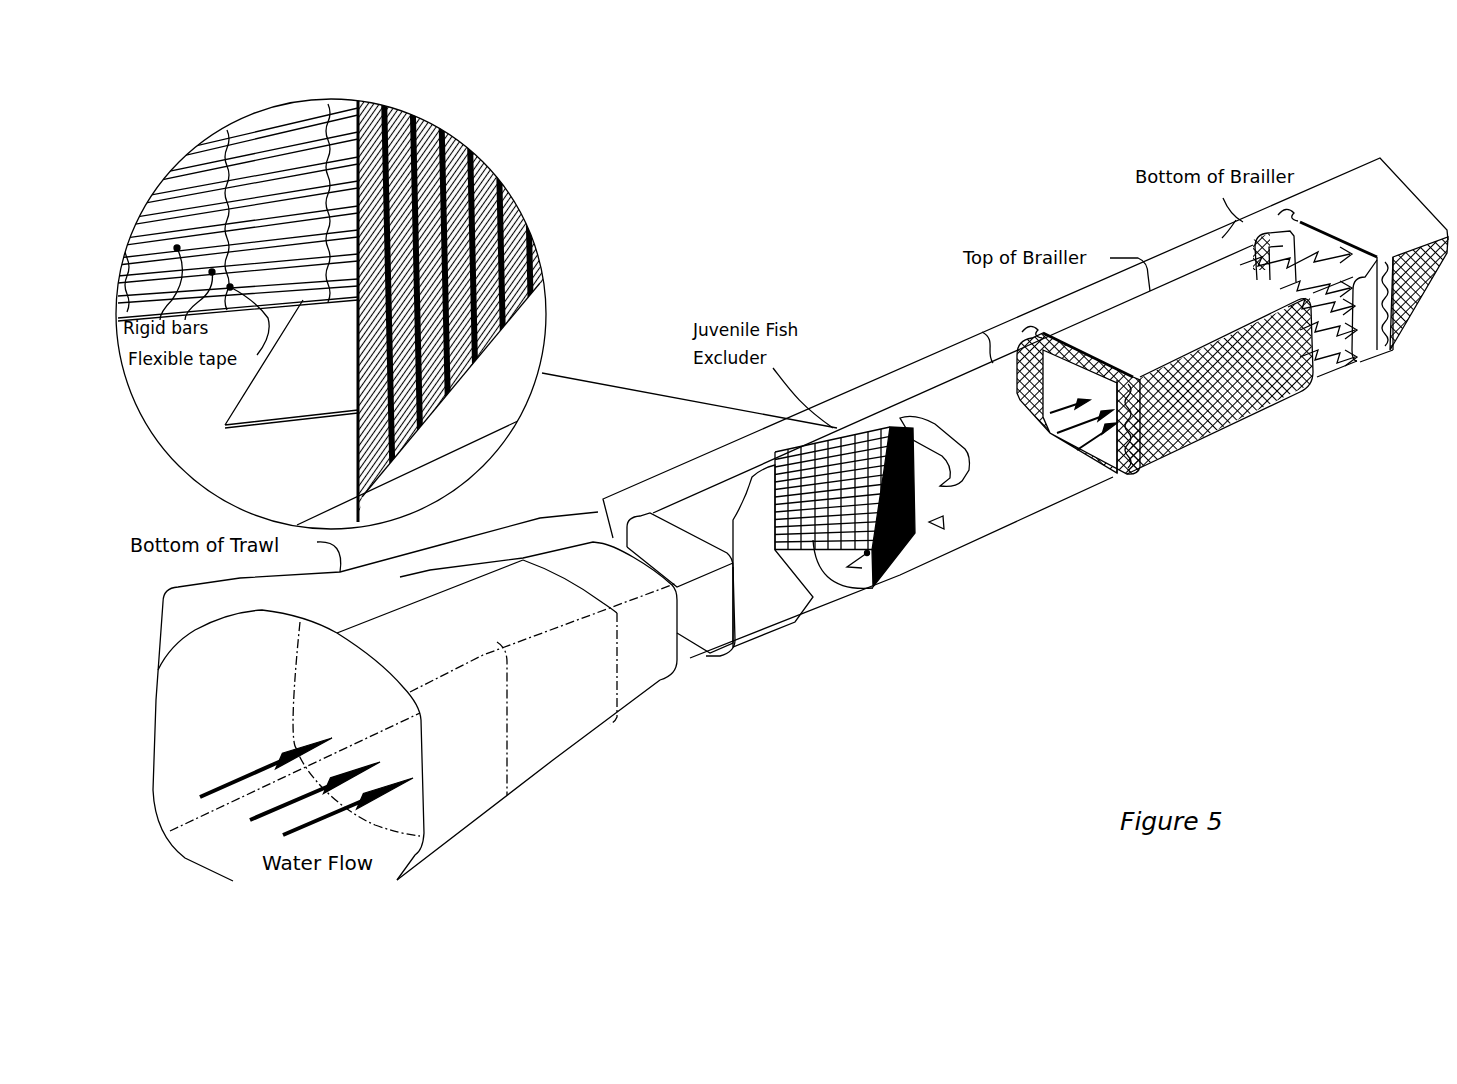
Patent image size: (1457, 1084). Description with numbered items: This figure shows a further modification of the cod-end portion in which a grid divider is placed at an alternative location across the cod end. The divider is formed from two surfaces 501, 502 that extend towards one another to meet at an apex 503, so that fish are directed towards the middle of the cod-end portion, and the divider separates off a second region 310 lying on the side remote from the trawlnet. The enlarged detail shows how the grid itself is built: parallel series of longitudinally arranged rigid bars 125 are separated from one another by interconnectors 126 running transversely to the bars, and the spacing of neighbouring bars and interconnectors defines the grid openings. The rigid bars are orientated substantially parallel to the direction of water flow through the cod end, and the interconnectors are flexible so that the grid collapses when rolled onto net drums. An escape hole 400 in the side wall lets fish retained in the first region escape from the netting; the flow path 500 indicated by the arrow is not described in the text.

The rigid bars 125 is at (290, 135).
The interconnectors 126 is at (360, 135).
The escape hole 400 is at (335, 348).
The surface 501 is at (833, 428).
The surface 502 is at (914, 540).
The apex 503 is at (948, 502).
The fish flow path 500 is at (936, 521).
The second region 310 is at (968, 530).